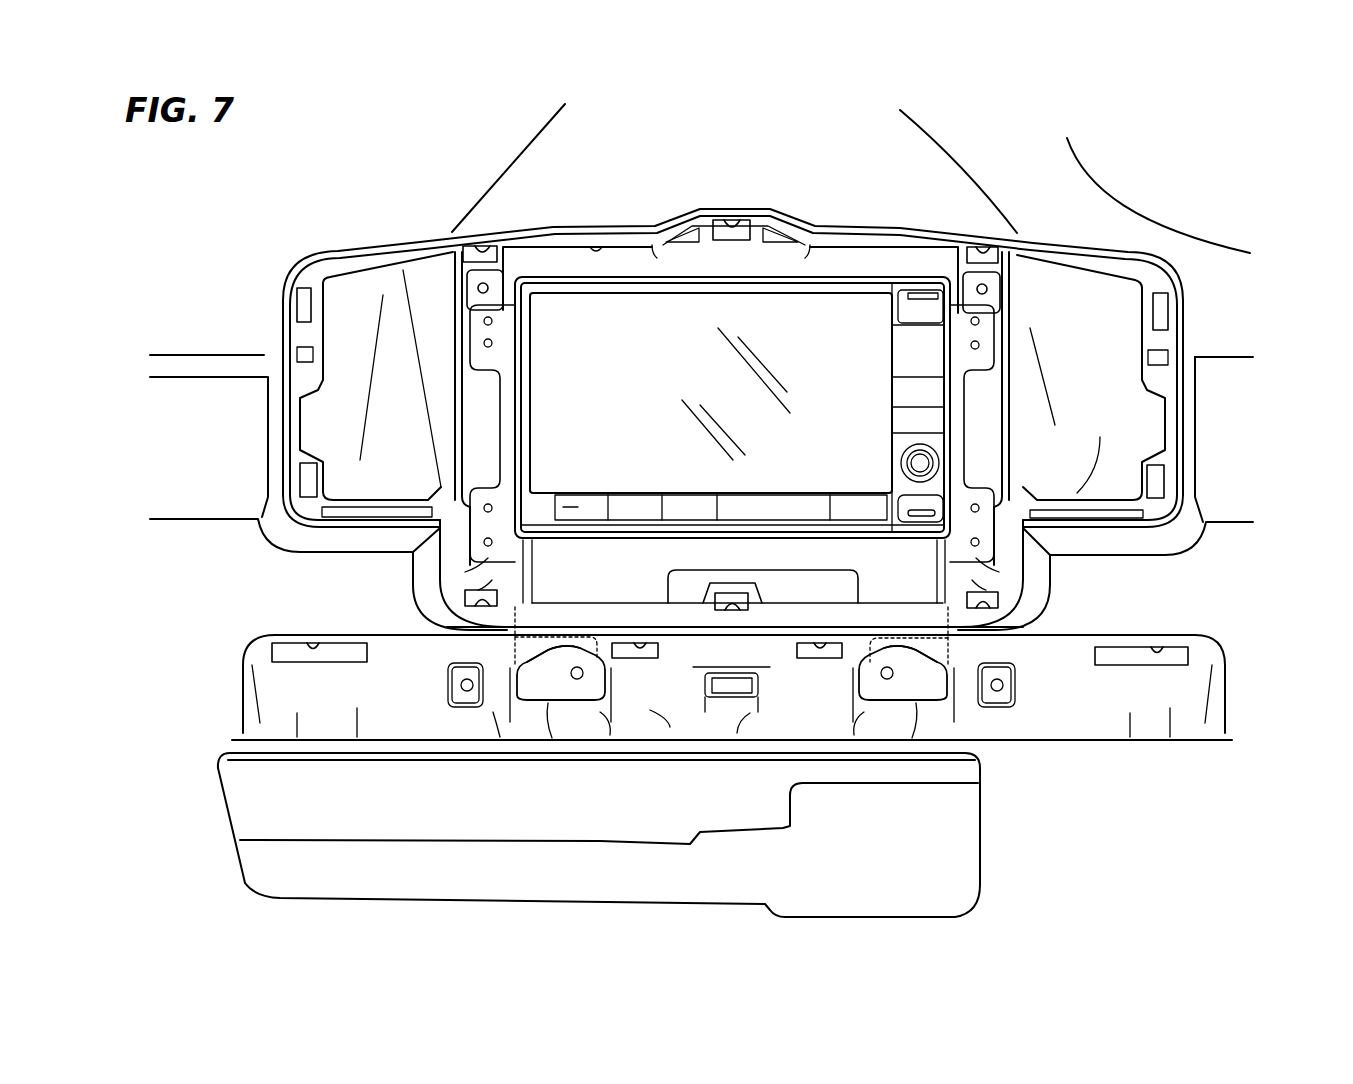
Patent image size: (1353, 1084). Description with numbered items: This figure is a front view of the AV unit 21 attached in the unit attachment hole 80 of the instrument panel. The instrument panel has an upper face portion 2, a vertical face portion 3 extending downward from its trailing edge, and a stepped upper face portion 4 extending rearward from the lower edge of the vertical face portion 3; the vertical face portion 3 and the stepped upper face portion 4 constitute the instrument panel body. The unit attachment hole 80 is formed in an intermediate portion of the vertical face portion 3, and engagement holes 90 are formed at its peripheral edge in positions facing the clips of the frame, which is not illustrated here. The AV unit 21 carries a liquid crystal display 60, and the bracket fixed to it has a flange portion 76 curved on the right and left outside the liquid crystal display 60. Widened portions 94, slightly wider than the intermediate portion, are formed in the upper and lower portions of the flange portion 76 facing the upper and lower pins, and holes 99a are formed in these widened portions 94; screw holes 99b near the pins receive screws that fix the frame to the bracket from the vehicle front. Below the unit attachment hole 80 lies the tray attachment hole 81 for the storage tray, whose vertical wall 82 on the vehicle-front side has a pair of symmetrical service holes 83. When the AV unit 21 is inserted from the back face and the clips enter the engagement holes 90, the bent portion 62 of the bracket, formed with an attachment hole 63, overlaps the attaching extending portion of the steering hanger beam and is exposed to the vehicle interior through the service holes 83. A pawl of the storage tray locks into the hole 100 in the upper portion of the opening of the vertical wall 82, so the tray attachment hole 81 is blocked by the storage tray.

The upper face portion 2 is at (1073, 200).
The vertical face portion 3 is at (1213, 400).
The stepped upper face portion 4 is at (1217, 557).
The AV unit 21 is at (840, 277).
The liquid crystal display 60 is at (632, 310).
The bent portion 62 is at (548, 705).
The attachment hole 63 is at (578, 680).
The flange portion 76 is at (472, 320).
The unit attachment hole 80 is at (596, 244).
The tray attachment hole 81 is at (1200, 647).
The vertical wall 82 is at (410, 657).
The service holes 83 is at (558, 655).
The engagement holes 90 is at (488, 247).
The widened portions 94 is at (472, 357).
The holes 99a is at (493, 344).
The screw holes 99b is at (493, 323).
The hole 100 is at (316, 647).